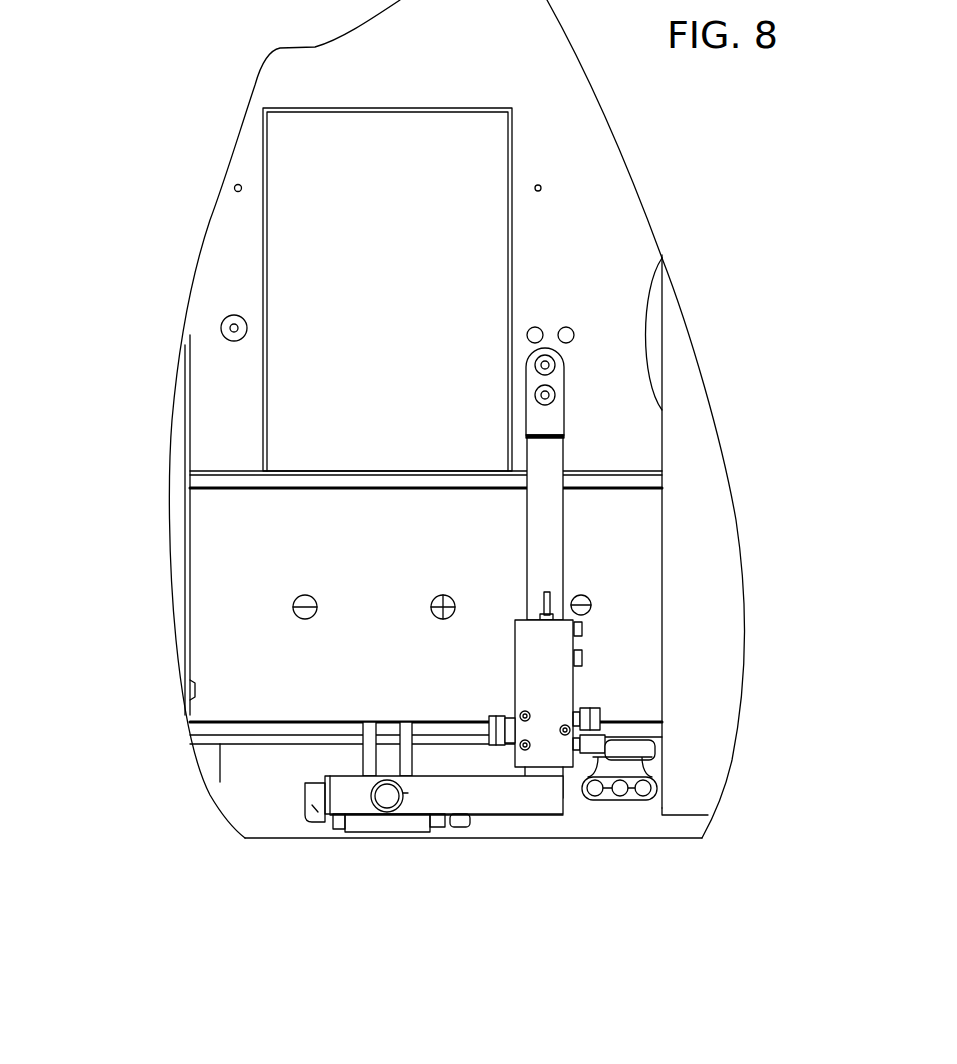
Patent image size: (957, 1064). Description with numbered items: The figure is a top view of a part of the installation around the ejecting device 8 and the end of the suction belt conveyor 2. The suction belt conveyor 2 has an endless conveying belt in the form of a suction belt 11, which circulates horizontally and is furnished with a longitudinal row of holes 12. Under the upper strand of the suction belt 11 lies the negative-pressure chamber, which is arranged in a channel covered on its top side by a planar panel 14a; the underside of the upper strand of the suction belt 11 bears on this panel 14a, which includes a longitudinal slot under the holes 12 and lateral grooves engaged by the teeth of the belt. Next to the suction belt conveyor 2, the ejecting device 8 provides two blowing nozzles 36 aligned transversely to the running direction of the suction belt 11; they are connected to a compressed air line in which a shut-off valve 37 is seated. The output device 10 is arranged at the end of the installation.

The suction belt conveyor 2 is at (222, 466).
The ejecting device 8 is at (365, 853).
The output device 10 is at (705, 535).
The suction belt 11 is at (630, 690).
The holes 12 is at (592, 607).
The panel 14a is at (613, 481).
The blowing nozzles 36 is at (307, 797).
The shut-off valve 37 is at (387, 797).